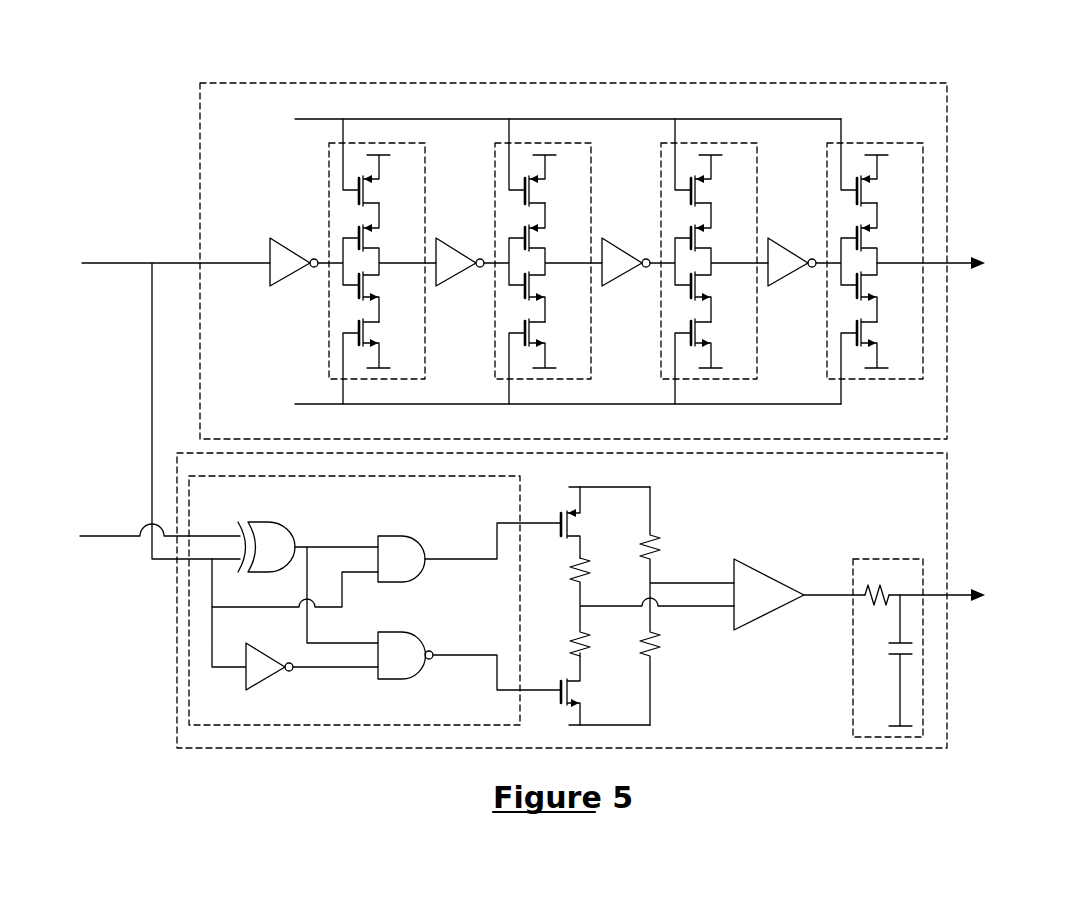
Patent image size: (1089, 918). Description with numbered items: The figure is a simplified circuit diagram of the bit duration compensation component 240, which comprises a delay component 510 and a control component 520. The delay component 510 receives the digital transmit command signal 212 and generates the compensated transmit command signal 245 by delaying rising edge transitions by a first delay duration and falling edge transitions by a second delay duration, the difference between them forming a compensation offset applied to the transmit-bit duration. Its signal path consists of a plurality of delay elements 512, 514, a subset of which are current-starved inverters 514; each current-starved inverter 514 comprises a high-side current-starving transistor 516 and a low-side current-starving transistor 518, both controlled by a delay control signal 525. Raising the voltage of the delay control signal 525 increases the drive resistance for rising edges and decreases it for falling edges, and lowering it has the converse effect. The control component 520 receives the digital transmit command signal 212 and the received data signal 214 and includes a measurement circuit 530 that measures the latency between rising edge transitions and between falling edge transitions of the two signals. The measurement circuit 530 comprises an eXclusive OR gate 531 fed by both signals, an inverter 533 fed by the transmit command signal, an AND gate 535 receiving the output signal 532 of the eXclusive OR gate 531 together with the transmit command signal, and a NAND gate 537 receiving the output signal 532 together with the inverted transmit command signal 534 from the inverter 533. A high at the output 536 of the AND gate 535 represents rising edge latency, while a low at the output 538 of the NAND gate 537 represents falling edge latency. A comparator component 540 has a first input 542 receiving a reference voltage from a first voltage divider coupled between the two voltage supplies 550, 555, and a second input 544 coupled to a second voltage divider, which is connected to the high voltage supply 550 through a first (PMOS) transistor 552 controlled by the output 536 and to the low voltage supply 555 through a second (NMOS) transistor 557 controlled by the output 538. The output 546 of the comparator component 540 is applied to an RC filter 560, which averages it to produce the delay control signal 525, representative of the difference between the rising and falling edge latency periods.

The digital transmit command signal 212 is at (103, 262).
The received data signal 214 is at (105, 537).
The bit duration compensation component 240 is at (1024, 163).
The compensated transmit command signal 245 is at (972, 262).
The delay component 510 is at (200, 118).
The delay element 512 is at (297, 252).
The current-starved inverter 514 is at (428, 176).
The high-side current-starving transistor 516 is at (379, 190).
The low-side current-starving transistor 518 is at (379, 334).
The control component 520 is at (250, 750).
The delay control signal 525 is at (260, 132).
The measurement circuit 530 is at (520, 500).
The eXclusive OR gate 531 is at (283, 535).
The output signal of the eXclusive OR gate 532 is at (333, 548).
The inverter 533 is at (258, 652).
The inverted transmit command signal 534 is at (330, 672).
The AND gate 535 is at (400, 530).
The output of the AND gate 536 is at (448, 557).
The NAND gate 537 is at (400, 630).
The output of the NAND gate 538 is at (448, 652).
The comparator component 540 is at (780, 578).
The first input of the comparator component 542 is at (687, 558).
The second input of the comparator component 544 is at (697, 607).
The output of the comparator component 546 is at (830, 598).
The first (high) voltage supply 550 is at (627, 487).
The first (PMOS) transistor 552 is at (582, 524).
The second (low) voltage supply 555 is at (615, 727).
The second (NMOS) transistor 557 is at (582, 692).
The RC filter 560 is at (888, 558).